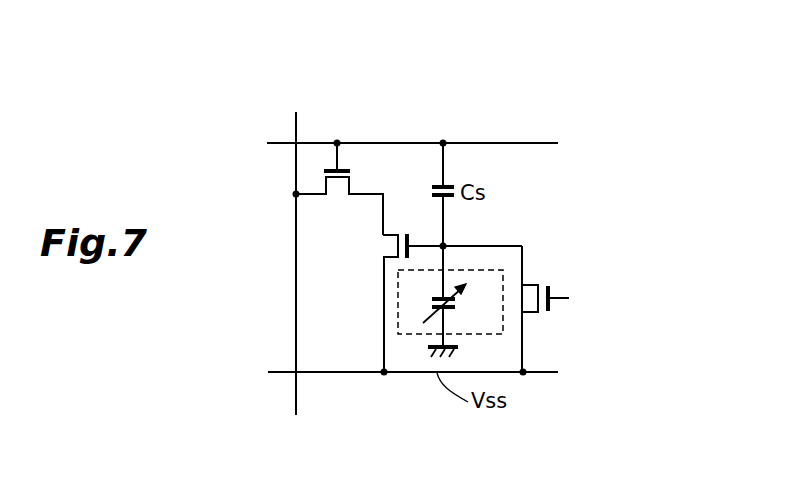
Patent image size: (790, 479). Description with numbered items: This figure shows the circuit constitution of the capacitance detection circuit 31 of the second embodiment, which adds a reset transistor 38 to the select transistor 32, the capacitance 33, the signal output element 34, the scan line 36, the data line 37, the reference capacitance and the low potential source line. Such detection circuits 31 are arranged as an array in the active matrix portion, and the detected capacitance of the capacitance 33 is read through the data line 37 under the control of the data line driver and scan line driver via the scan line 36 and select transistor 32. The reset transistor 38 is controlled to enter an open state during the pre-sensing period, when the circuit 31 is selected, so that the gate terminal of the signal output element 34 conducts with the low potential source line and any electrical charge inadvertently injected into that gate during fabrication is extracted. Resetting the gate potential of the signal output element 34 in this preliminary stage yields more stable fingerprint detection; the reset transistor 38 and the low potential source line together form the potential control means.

The capacitance detection circuit 31 is at (583, 140).
The select transistor 32 is at (335, 190).
The capacitance 33 is at (398, 288).
The signal output element 34 is at (389, 247).
The scan line 36 is at (372, 142).
The data line 37 is at (297, 133).
The reset transistor 38 is at (552, 292).